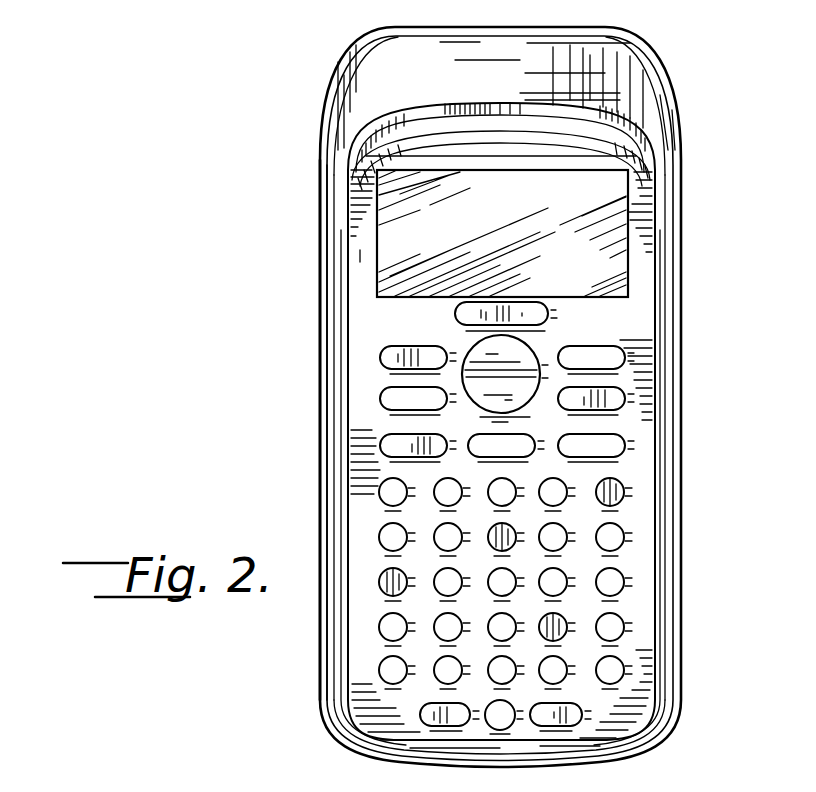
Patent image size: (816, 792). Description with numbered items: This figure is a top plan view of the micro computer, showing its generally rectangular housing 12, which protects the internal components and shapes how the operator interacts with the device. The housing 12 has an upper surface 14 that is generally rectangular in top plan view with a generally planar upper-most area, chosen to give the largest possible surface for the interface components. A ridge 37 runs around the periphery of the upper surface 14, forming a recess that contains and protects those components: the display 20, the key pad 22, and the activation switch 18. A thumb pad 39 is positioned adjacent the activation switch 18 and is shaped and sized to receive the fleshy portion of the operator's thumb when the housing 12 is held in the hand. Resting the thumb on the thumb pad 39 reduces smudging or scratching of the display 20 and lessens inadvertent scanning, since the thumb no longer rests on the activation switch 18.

The housing 12 is at (312, 258).
The upper surface 14 is at (633, 428).
The activation switch 18 is at (462, 381).
The display 20 is at (598, 268).
The key pad 22 is at (381, 529).
The ridge 37 is at (343, 204).
The thumb pad 39 is at (467, 313).